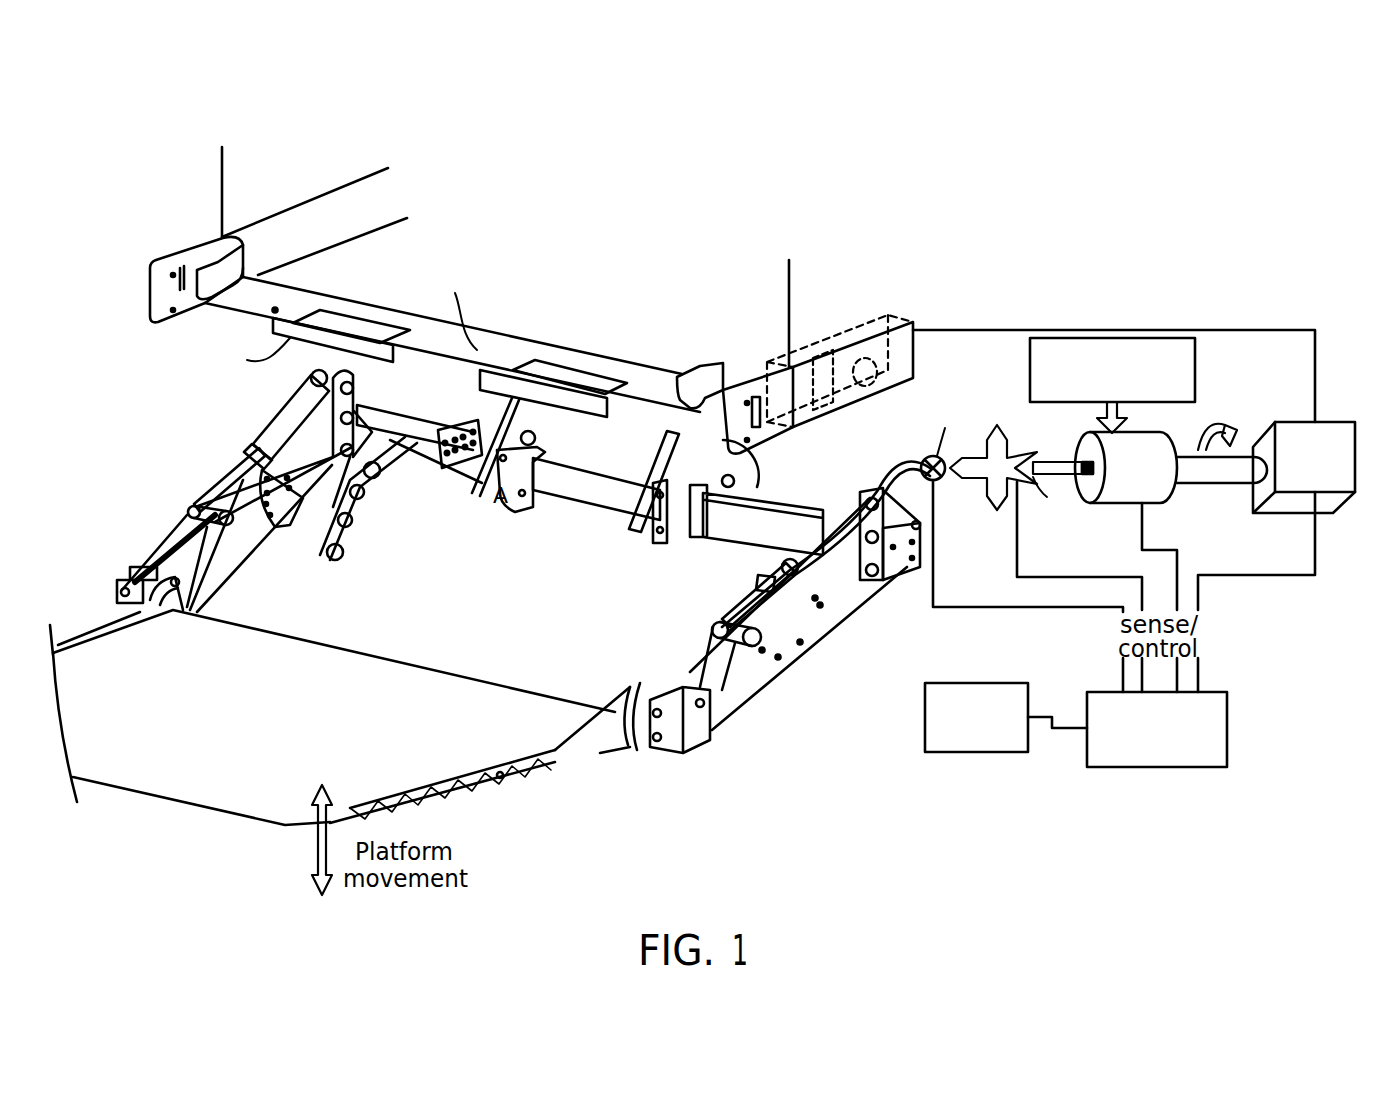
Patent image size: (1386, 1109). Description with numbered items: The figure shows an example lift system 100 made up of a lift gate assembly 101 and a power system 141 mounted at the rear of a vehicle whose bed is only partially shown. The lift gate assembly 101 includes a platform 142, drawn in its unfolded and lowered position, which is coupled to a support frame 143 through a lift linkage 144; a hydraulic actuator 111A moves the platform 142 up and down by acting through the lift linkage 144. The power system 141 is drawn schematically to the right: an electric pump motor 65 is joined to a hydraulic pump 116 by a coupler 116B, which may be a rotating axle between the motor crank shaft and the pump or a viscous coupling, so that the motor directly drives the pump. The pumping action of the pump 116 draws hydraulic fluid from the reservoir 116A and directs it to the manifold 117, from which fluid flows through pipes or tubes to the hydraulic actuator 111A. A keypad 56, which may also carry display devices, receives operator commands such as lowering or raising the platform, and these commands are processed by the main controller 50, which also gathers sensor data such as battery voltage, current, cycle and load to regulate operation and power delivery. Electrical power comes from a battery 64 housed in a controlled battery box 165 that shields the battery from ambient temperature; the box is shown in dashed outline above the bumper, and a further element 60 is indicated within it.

The lift system 100 is at (156, 116).
The controlled battery box 165 is at (864, 337).
The sensor 60 is at (817, 390).
The battery 64 is at (862, 362).
The electric pump motor 65 is at (1335, 422).
The reservoir 116A is at (1195, 368).
The hydraulic pump 116 is at (1128, 504).
The coupler 116B is at (1210, 488).
The manifold 117 is at (997, 505).
The hydraulic actuator 111A is at (823, 540).
The support frame 143 is at (590, 497).
The platform 142 is at (433, 688).
The lift linkage 144 is at (757, 657).
The power system 141 is at (1316, 747).
The lift gate assembly 101 is at (640, 843).
The keypad 56 is at (923, 722).
The main controller 50 is at (1227, 730).